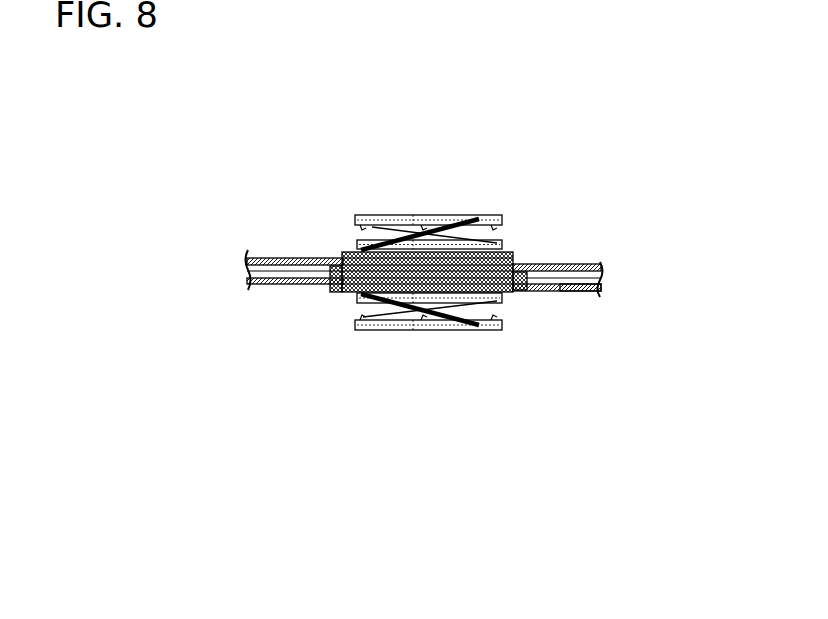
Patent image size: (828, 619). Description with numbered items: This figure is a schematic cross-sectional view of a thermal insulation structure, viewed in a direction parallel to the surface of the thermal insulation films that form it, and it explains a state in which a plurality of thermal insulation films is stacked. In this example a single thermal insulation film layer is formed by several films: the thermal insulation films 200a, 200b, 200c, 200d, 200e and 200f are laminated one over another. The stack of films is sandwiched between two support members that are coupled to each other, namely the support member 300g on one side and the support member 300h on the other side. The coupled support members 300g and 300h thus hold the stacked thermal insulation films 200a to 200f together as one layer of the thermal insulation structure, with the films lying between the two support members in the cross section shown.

The thermal insulation film 200a is at (503, 252).
The thermal insulation film 200b is at (297, 257).
The thermal insulation film 200c is at (578, 262).
The thermal insulation film 200d is at (552, 296).
The thermal insulation film 200e is at (273, 292).
The thermal insulation film 200f is at (575, 296).
The support member 300g is at (508, 234).
The support member 300h is at (347, 311).